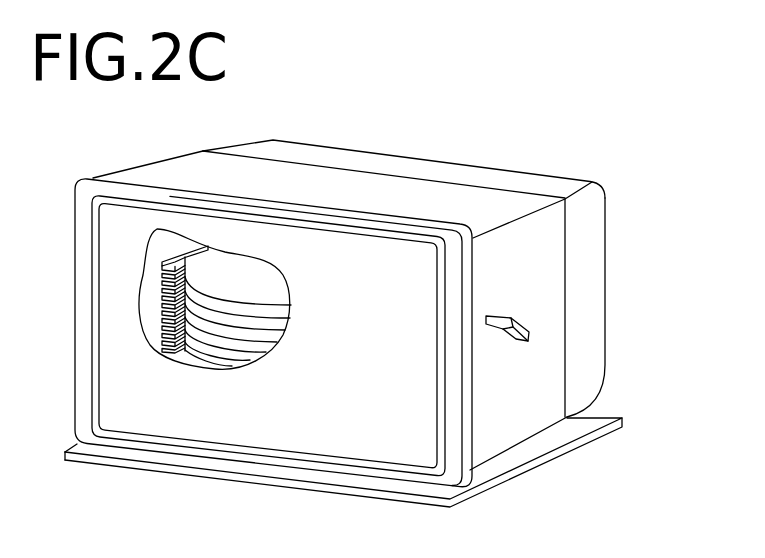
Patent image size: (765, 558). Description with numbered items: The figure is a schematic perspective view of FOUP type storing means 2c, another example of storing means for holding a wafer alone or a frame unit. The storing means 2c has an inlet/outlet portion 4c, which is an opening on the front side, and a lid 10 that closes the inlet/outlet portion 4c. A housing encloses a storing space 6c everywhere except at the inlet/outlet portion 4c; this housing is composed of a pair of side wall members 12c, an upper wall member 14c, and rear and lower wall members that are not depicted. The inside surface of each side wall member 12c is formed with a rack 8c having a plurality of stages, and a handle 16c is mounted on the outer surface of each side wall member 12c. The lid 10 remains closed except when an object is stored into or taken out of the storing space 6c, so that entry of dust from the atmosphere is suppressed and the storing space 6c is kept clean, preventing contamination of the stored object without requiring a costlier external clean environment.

The FOUP type storing means 2c is at (384, 279).
The inlet/outlet portion 4c is at (100, 267).
The storing space 6c is at (146, 332).
The rack 8c is at (170, 262).
The lid 10 is at (255, 422).
The side wall member 12c is at (597, 294).
The upper wall member 14c is at (345, 178).
The handle 16c is at (513, 320).